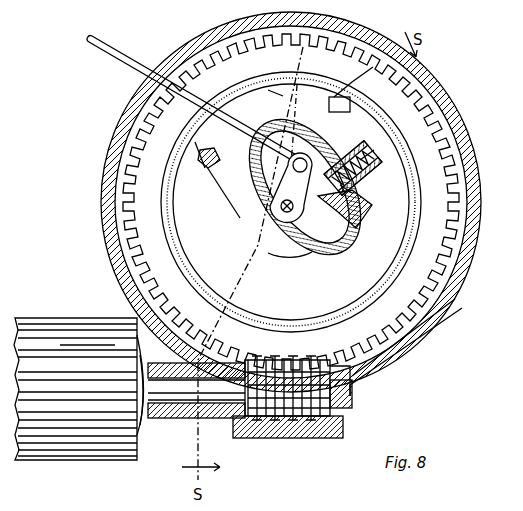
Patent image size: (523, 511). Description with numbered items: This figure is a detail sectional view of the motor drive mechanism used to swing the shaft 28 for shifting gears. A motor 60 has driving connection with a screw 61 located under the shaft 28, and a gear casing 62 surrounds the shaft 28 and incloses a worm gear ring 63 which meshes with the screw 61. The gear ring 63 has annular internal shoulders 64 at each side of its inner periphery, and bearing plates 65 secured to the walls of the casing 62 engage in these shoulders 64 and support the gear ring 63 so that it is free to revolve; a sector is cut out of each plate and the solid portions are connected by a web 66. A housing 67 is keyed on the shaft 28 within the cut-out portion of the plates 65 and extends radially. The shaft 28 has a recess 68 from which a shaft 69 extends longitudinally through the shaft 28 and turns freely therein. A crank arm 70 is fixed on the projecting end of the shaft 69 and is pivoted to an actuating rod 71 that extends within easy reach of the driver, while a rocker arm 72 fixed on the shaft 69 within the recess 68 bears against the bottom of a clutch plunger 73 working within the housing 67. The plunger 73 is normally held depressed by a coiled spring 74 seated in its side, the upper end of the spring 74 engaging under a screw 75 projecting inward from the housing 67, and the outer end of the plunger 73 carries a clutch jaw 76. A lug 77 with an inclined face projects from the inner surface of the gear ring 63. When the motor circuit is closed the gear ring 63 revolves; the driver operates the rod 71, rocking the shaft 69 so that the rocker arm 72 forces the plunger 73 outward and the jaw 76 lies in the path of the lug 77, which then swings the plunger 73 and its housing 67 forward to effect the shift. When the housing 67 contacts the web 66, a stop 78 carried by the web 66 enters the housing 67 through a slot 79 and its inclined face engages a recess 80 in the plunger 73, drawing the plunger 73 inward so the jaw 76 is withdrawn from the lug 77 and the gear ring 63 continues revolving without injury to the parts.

The shaft 28 is at (291, 202).
The motor 60 is at (78, 466).
The screw 61 is at (300, 440).
The gear casing 62 is at (457, 200).
The worm gear ring 63 is at (423, 141).
The annular internal shoulders 64 is at (249, 90).
The bearing plates 65 is at (236, 232).
The web 66 is at (203, 168).
The housing 67 is at (312, 254).
The recess 68 is at (225, 191).
The shaft 69 is at (281, 206).
The crank arm 70 is at (296, 183).
The actuating rod 71 is at (112, 62).
The rocker arm 72 is at (338, 224).
The clutch plunger 73 is at (341, 156).
The coiled spring 74 is at (356, 192).
The screw 75 is at (366, 172).
The clutch jaw 76 is at (340, 110).
The lug 77 is at (361, 84).
The stop 78 is at (216, 156).
The slot 79 is at (264, 100).
The recess 80 is at (299, 158).